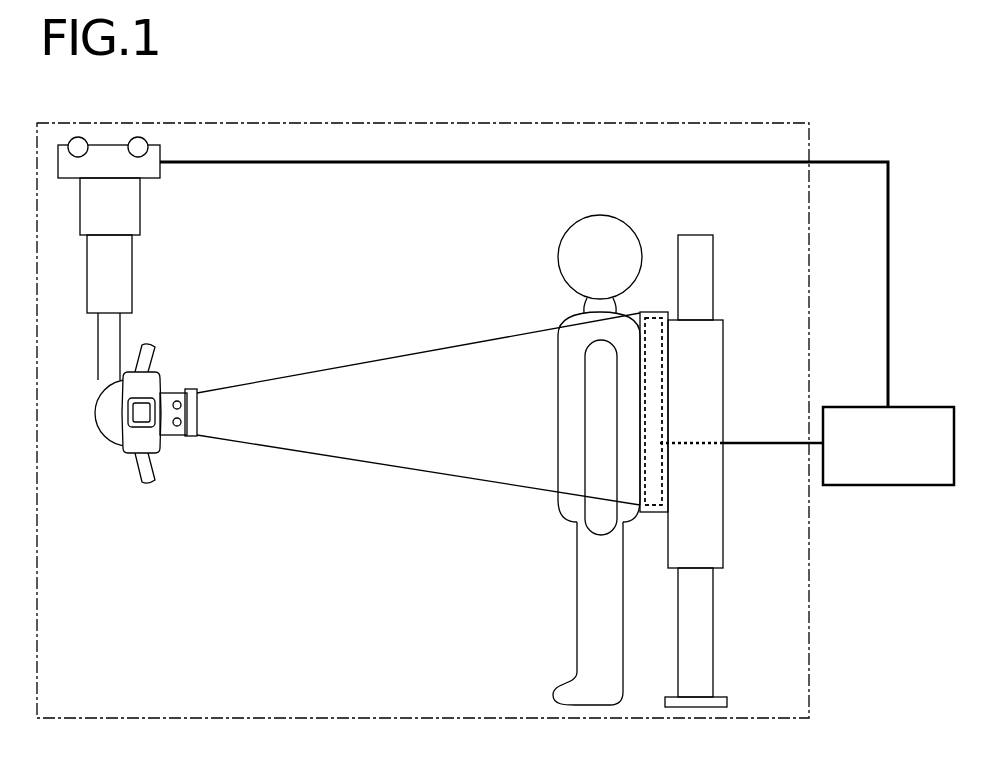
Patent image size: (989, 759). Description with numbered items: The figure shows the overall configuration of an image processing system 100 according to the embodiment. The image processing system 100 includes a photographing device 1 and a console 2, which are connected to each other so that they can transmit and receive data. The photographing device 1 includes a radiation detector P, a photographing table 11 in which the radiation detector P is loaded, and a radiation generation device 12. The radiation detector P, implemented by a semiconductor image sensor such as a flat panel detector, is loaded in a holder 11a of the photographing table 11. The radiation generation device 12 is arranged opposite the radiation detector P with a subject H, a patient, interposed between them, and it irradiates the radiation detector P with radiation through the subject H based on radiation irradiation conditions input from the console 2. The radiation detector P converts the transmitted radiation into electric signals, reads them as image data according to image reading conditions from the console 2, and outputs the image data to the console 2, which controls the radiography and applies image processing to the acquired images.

The photographing device 1 is at (812, 148).
The image processing system 100 is at (865, 147).
The console 2 is at (907, 405).
The photographing table 11 is at (718, 228).
The holder 11a is at (650, 312).
The radiation generation device 12 is at (98, 410).
The subject H is at (558, 403).
The radiation detector P is at (662, 470).